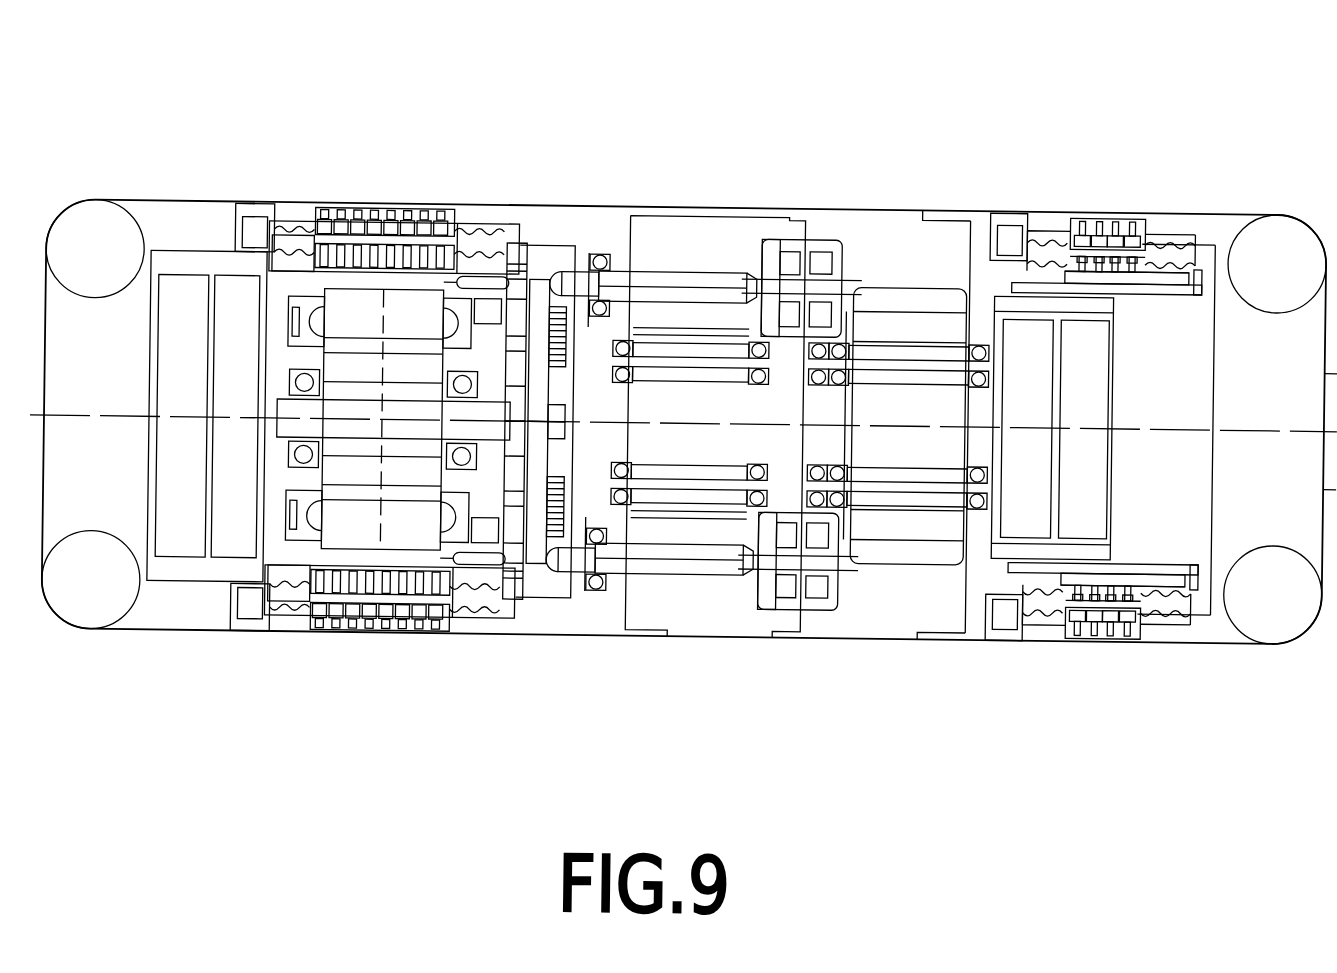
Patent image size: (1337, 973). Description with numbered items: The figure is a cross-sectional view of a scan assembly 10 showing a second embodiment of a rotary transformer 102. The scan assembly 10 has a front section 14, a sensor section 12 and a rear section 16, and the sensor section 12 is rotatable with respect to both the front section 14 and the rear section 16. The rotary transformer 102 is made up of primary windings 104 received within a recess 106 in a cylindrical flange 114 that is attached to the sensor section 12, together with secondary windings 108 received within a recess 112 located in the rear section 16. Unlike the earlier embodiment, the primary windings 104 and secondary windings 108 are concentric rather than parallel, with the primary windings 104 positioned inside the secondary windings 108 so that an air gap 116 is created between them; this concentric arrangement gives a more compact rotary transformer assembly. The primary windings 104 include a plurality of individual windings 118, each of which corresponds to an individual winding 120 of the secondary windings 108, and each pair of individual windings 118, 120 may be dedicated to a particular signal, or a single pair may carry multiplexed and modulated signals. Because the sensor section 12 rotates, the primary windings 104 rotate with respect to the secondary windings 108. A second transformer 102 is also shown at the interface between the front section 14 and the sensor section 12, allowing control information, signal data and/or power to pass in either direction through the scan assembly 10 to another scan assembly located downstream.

The scan assembly 10 is at (727, 62).
The sensor section 12 is at (858, 618).
The front section 14 is at (180, 598).
The rear section 16 is at (1018, 619).
The rotary transformer 102 is at (775, 401).
The primary windings 104 is at (1060, 267).
The recess 106 is at (1113, 269).
The secondary windings 108 is at (1168, 457).
The recess 112 is at (1116, 208).
The cylindrical flange 114 is at (1176, 278).
The air gap 116 is at (1057, 232).
The individual winding 118 is at (1101, 397).
The individual winding 120 is at (1088, 206).